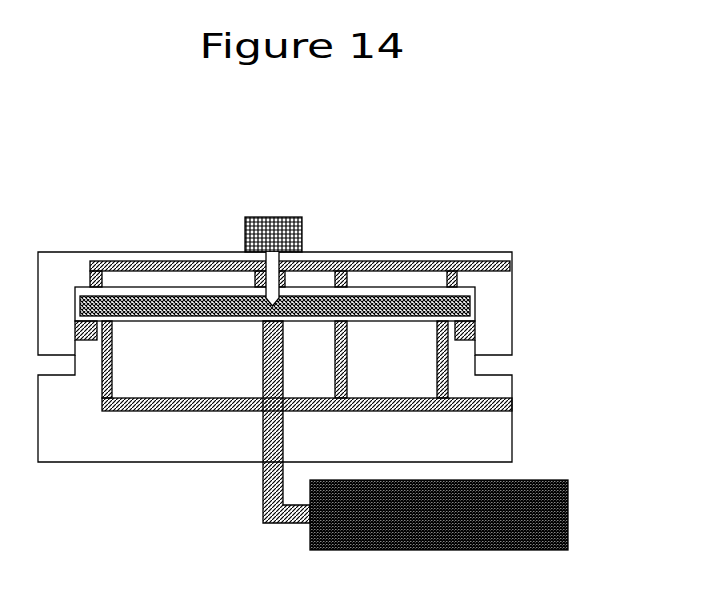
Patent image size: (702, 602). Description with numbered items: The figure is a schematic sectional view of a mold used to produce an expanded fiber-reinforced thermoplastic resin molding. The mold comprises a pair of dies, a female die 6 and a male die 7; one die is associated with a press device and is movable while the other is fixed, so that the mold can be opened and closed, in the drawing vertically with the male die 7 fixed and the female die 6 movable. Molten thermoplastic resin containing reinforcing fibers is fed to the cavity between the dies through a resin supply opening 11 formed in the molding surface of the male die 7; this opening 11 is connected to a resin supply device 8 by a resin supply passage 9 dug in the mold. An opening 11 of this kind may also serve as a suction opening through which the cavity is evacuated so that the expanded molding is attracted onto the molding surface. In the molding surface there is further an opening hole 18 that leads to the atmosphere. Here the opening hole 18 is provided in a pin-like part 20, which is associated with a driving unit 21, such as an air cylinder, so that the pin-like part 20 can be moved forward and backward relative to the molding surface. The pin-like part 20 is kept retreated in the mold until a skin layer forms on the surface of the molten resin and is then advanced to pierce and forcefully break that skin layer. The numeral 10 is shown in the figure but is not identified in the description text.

The female die 6 is at (502, 287).
The male die 7 is at (493, 437).
The resin supply device 8 is at (568, 480).
The resin supply passage 9 is at (283, 428).
The membrane plate 10 is at (297, 310).
The resin supply opening 11 is at (352, 287).
The opening hole 18 is at (284, 286).
The pin-like part 20 is at (232, 267).
The driving unit 21 is at (250, 217).